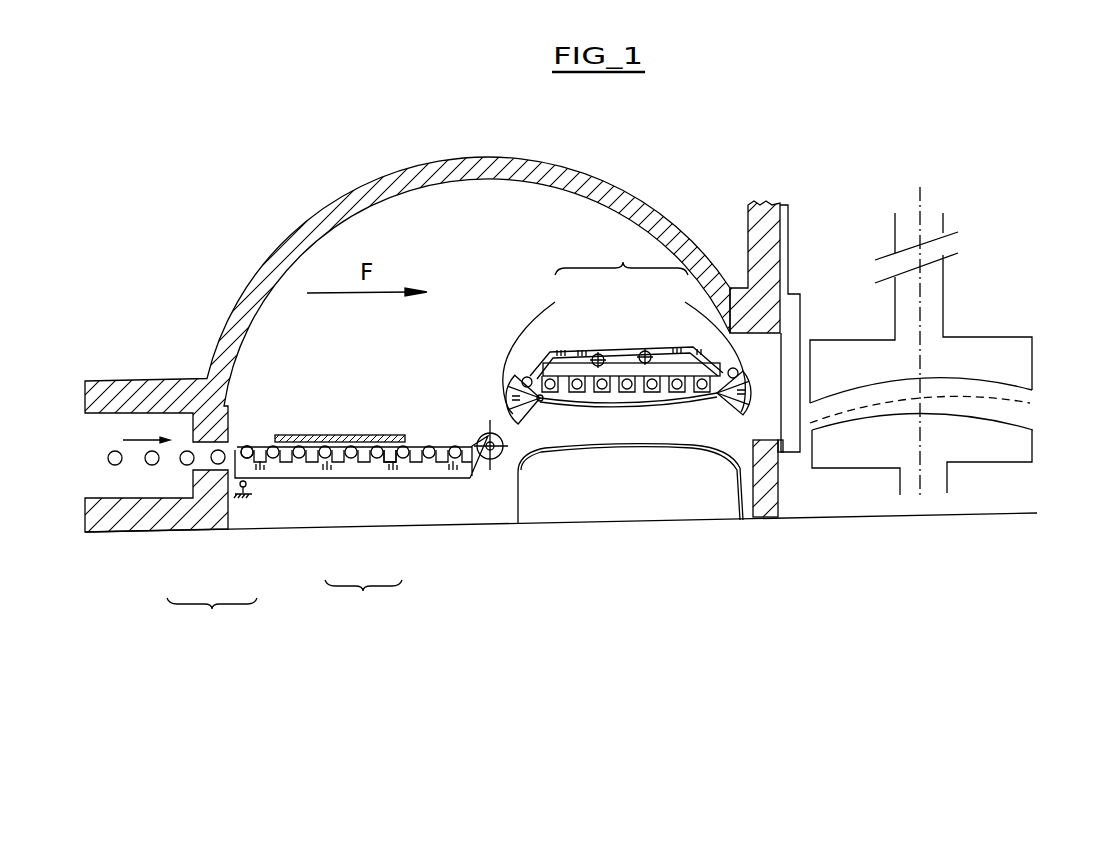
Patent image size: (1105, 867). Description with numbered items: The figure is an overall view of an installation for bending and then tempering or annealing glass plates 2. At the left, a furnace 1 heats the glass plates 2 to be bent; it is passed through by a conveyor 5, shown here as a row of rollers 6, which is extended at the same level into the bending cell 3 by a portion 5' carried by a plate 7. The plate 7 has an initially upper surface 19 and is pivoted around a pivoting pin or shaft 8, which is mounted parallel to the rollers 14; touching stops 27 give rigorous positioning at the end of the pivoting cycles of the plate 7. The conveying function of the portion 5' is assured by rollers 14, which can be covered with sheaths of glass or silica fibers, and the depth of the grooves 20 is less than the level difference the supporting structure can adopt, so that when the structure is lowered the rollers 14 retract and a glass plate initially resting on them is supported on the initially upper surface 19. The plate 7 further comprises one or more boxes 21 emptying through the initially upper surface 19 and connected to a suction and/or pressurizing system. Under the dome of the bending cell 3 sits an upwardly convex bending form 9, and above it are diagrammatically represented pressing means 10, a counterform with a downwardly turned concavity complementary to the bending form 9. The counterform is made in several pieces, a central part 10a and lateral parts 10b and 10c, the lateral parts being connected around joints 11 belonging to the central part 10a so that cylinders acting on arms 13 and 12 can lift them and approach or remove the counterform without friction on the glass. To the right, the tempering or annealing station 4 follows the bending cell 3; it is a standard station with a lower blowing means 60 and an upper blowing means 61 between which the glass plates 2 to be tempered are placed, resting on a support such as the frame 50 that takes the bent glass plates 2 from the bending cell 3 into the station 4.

The furnace 1 is at (133, 483).
The glass plates 2 is at (348, 434).
The bending cell 3 is at (554, 234).
The tempering or annealing station 4 is at (847, 485).
The conveyor 5 is at (212, 619).
The portion 5' is at (363, 601).
The rollers 6 is at (152, 465).
The plate 7 is at (470, 480).
The pivoting pin or shaft 8 is at (498, 456).
The bending form 9 is at (693, 458).
The pressing means 10 is at (621, 255).
The central part 10a is at (620, 372).
The lateral part 10b is at (702, 346).
The lateral part 10c is at (546, 350).
The joints 11 is at (540, 402).
The arm 12 is at (572, 357).
The arm 13 is at (670, 353).
The rollers 14 is at (299, 456).
The initially upper surface 19 is at (261, 447).
The grooves 20 is at (383, 457).
The boxes 21 is at (283, 474).
The touching stops 27 is at (245, 491).
The frame 50 is at (1022, 403).
The lower blowing means 60 is at (1003, 450).
The upper blowing means 61 is at (993, 358).